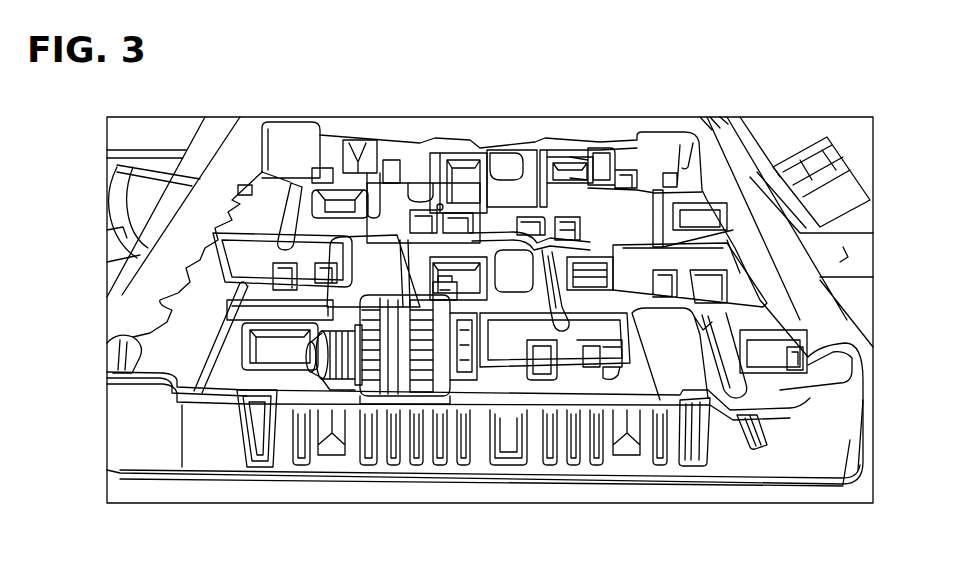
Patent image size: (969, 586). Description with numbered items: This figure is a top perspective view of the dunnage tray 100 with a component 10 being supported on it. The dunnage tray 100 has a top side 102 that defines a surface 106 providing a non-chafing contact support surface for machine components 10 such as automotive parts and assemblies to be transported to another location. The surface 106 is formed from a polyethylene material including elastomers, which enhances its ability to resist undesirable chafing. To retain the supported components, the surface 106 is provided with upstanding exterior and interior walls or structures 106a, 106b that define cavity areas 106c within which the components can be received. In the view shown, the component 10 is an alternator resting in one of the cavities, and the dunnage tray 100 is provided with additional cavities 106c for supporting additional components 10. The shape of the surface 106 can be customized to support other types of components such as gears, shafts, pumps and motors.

The dunnage tray 100 is at (680, 98).
The top side 102 is at (617, 450).
The surface 106 is at (728, 447).
The exterior walls 106a is at (320, 450).
The interior walls 106b is at (287, 358).
The cavity areas 106c is at (482, 300).
The component 10 is at (385, 395).